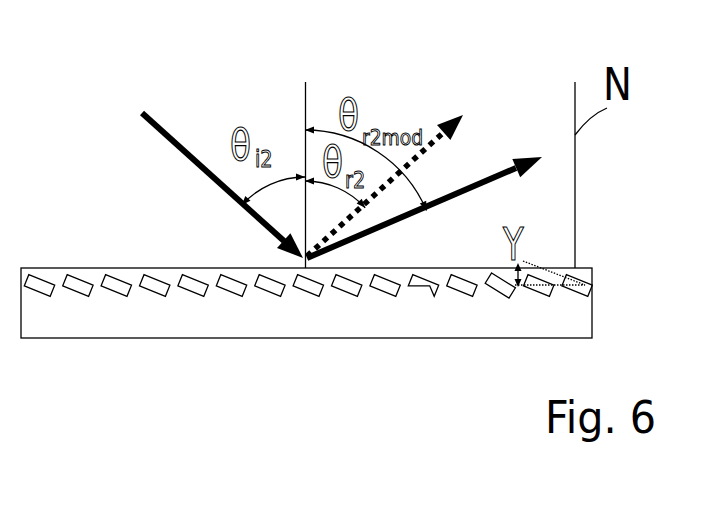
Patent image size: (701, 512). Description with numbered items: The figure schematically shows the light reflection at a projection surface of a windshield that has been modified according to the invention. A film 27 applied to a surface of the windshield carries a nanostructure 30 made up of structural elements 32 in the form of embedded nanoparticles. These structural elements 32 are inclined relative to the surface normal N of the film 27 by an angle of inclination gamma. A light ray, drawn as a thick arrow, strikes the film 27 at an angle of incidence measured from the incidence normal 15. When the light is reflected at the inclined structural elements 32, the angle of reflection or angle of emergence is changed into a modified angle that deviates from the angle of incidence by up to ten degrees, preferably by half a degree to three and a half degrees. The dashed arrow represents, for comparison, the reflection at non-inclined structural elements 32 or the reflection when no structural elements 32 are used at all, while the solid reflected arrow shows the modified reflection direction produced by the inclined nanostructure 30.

The incidence normal 15 is at (306, 110).
The film 27 is at (403, 318).
The nanostructure 30 is at (108, 306).
The structural elements 32 is at (125, 283).